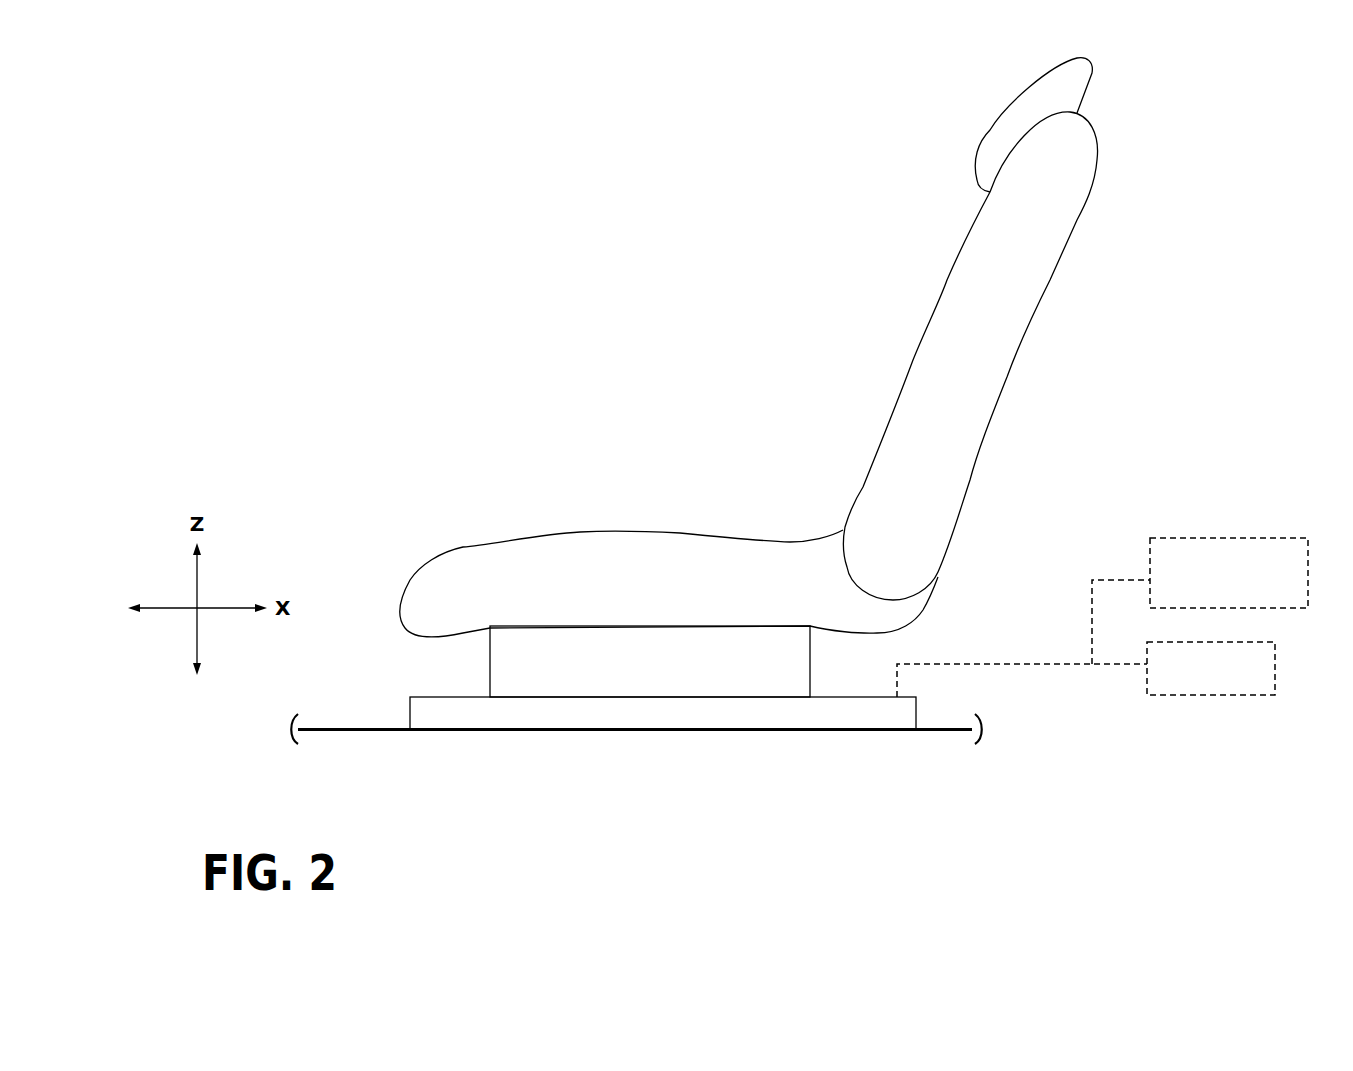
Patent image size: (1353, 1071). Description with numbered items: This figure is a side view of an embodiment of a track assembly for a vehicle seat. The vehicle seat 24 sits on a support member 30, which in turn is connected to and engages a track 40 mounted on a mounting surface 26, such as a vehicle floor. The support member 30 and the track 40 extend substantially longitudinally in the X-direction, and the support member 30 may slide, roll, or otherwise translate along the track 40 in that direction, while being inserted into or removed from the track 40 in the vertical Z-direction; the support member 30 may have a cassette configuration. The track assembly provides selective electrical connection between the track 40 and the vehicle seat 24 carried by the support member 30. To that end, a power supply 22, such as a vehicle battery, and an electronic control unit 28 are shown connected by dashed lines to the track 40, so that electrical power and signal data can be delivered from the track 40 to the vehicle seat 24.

The power supply 22 is at (1260, 538).
The vehicle seat 24 is at (1028, 457).
The mounting surface 26 is at (940, 732).
The electronic control unit (ECU) 28 is at (1197, 695).
The support member 30 is at (815, 665).
The track 40 is at (923, 707).